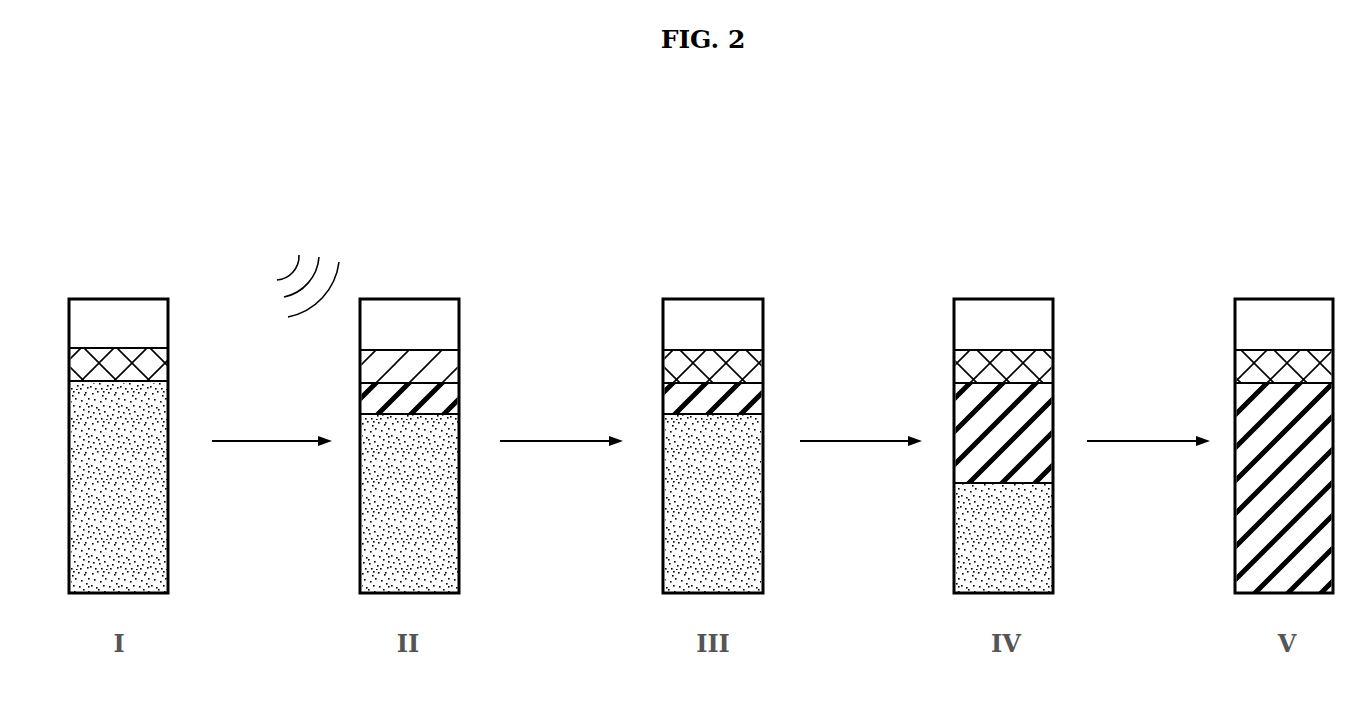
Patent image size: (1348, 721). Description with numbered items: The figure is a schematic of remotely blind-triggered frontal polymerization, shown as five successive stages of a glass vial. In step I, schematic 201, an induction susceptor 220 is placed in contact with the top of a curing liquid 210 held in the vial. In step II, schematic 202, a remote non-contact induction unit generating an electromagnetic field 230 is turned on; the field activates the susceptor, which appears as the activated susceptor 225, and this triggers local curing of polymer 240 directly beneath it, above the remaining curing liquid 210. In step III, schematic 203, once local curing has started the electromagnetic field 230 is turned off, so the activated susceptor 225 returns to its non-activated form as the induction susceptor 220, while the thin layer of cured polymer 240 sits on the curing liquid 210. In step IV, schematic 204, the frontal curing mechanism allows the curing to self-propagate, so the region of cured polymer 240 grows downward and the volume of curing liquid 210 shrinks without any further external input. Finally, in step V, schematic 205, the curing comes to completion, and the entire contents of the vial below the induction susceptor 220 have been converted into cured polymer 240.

The schematic of step I 201 is at (143, 267).
The schematic of step II 202 is at (443, 267).
The schematic of step III 203 is at (736, 267).
The schematic of step IV 204 is at (1026, 267).
The schematic of step V 205 is at (1307, 267).
The curing liquid 210 is at (163, 517).
The induction susceptor 220 is at (168, 368).
The activated susceptor 225 is at (459, 372).
The electromagnetic field 230 is at (329, 229).
The cured polymer 240 is at (663, 398).